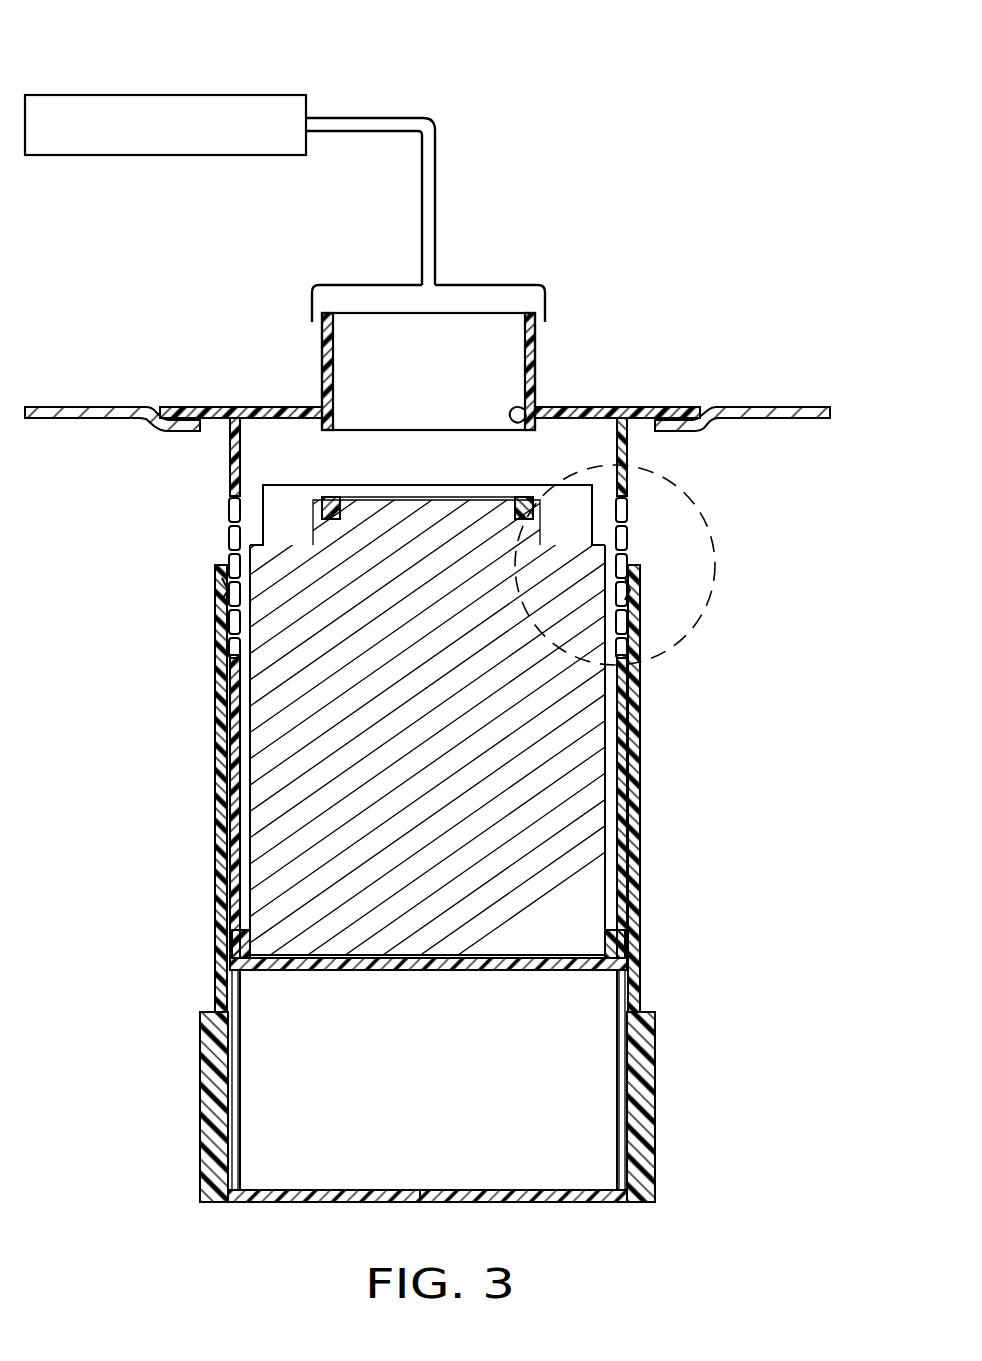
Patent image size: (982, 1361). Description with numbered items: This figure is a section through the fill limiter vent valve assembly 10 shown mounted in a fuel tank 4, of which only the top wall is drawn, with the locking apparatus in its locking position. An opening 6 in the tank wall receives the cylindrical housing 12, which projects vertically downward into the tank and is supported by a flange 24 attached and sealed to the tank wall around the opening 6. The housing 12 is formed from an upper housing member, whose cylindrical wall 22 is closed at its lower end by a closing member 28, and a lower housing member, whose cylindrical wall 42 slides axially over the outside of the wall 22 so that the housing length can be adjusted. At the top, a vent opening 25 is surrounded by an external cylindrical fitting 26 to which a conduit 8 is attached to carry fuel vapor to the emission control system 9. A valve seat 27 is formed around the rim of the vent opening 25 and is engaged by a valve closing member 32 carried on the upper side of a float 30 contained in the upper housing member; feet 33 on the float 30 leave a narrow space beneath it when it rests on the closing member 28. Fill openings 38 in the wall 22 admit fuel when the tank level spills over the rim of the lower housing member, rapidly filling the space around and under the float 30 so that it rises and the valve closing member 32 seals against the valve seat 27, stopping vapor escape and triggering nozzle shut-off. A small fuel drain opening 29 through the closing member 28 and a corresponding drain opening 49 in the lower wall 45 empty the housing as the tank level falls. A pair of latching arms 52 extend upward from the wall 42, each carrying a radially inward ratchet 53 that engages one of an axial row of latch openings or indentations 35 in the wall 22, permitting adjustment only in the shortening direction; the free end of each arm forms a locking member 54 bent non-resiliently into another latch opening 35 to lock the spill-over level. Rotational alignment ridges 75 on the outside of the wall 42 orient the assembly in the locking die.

The fuel tank 4 is at (790, 407).
The opening 6 is at (655, 431).
The conduit 8 is at (378, 118).
The emission control system 9 is at (237, 95).
The fill limiter vent valve assembly 10 is at (688, 150).
The cylindrical housing 12 is at (660, 795).
The cylindrical wall 22 is at (240, 812).
The flange 24 is at (195, 407).
The vent opening 25 is at (530, 408).
The external cylindrical fitting 26 is at (322, 347).
The valve seat 27 is at (303, 462).
The closing member 28 is at (337, 970).
The fuel drain opening 29 is at (433, 975).
The float 30 is at (275, 730).
The valve closing member 32 is at (342, 503).
The feet 33 is at (268, 963).
The latch openings or indentations 35 is at (620, 605).
The fill openings 38 is at (585, 487).
The cylindrical wall 42 is at (642, 912).
The lower wall 45 is at (570, 1200).
The drain opening 49 is at (430, 1195).
The latching arms 52 is at (640, 585).
The ratchet 53 is at (226, 590).
The locking member 54 is at (233, 556).
The rotational alignment ridges 75 is at (210, 1070).